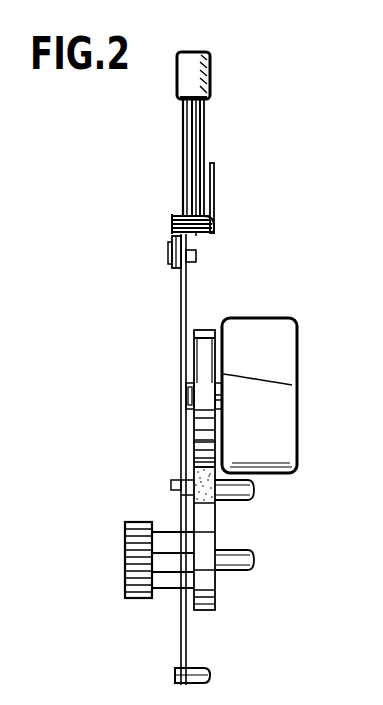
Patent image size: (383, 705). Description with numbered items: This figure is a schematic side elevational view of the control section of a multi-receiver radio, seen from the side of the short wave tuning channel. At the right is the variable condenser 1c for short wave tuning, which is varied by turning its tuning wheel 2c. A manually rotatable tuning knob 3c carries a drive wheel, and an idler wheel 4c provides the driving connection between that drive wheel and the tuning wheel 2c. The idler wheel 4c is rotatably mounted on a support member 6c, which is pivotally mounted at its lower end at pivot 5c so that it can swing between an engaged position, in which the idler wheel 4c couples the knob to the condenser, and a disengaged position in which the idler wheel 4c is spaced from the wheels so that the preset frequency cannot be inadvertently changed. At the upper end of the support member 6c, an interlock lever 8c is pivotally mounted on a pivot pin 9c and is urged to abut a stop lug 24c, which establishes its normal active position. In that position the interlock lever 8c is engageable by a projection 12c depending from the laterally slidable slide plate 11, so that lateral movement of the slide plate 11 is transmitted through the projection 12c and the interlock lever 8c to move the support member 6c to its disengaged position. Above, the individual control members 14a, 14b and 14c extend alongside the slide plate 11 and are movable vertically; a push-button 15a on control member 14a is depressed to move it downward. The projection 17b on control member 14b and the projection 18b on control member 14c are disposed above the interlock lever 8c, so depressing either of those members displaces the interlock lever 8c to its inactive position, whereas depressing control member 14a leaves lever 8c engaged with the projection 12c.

The variable condenser 1c is at (284, 372).
The tuning wheel 2c is at (205, 336).
The tuning knob 3c is at (142, 599).
The idler wheel 4c is at (206, 492).
The pivot 5c is at (200, 668).
The support member 6c is at (181, 353).
The interlock lever 8c is at (168, 252).
The pivot pin 9c is at (194, 256).
The slide plate 11 is at (214, 183).
The projection 12c is at (196, 228).
The individual control member 14a is at (183, 138).
The individual control member 14b is at (197, 115).
The individual control member 14c is at (200, 138).
The push-button 15a is at (192, 62).
The projection 17b is at (182, 213).
The projection 18b is at (206, 213).
The stop lug 24c is at (172, 238).